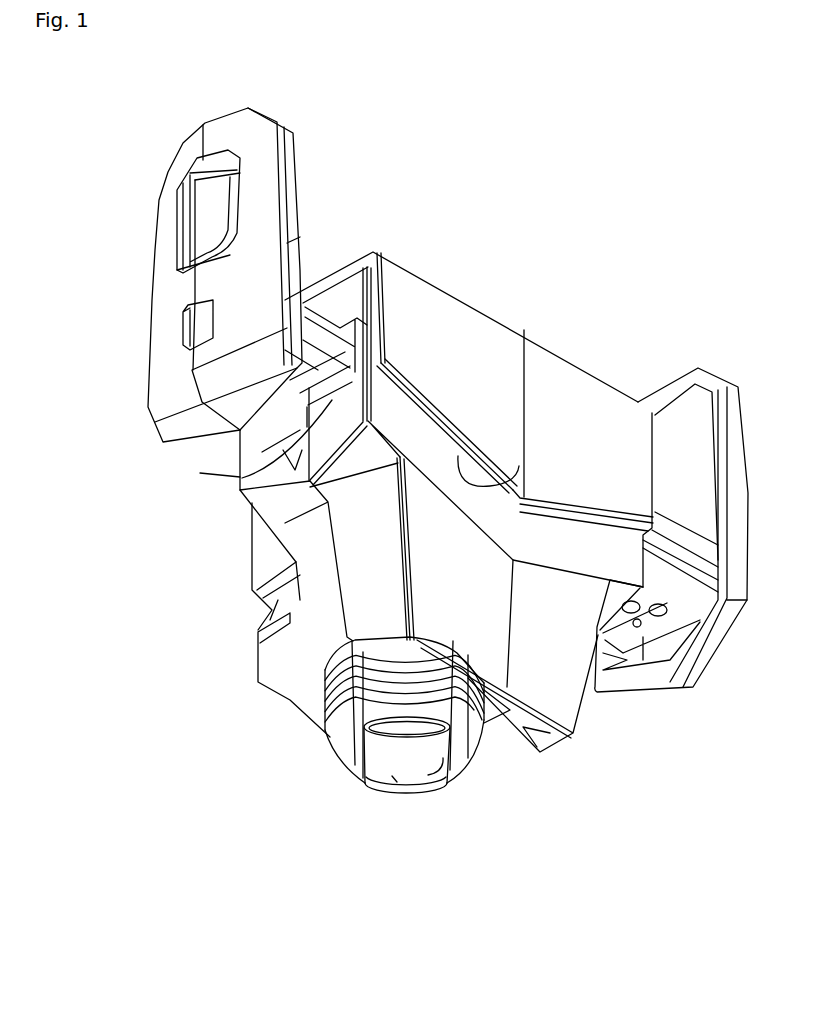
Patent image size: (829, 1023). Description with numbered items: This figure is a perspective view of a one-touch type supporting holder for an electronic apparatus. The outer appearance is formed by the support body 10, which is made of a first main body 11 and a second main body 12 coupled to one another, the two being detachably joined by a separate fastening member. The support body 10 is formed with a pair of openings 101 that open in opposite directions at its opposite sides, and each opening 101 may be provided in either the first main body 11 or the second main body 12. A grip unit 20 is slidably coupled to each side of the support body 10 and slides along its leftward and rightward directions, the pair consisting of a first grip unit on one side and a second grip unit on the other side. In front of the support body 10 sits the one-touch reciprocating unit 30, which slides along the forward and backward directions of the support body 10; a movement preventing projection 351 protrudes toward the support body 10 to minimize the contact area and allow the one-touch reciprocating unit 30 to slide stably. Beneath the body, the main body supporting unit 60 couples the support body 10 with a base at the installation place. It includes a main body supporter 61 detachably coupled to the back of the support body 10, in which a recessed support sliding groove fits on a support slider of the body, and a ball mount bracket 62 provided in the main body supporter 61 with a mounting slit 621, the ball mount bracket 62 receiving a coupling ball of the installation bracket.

The support body 10 is at (330, 509).
The first main body 11 is at (263, 557).
The second main body 12 is at (427, 598).
The opening 101 is at (200, 474).
The grip unit 20 is at (180, 141).
The one-touch reciprocating unit 30 is at (469, 396).
The movement preventing projection 351 is at (488, 480).
The main body supporting unit 60 is at (335, 764).
The main body supporter 61 is at (286, 710).
The ball mount bracket 62 is at (405, 782).
The mounting slit 621 is at (429, 780).